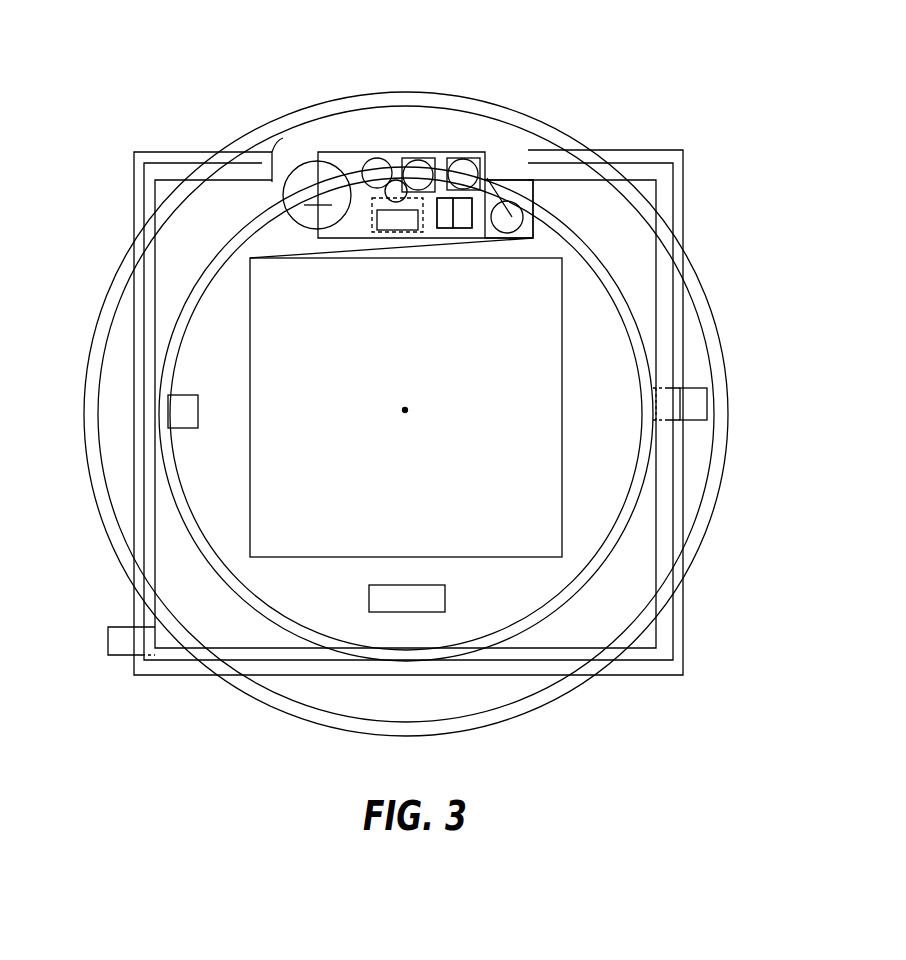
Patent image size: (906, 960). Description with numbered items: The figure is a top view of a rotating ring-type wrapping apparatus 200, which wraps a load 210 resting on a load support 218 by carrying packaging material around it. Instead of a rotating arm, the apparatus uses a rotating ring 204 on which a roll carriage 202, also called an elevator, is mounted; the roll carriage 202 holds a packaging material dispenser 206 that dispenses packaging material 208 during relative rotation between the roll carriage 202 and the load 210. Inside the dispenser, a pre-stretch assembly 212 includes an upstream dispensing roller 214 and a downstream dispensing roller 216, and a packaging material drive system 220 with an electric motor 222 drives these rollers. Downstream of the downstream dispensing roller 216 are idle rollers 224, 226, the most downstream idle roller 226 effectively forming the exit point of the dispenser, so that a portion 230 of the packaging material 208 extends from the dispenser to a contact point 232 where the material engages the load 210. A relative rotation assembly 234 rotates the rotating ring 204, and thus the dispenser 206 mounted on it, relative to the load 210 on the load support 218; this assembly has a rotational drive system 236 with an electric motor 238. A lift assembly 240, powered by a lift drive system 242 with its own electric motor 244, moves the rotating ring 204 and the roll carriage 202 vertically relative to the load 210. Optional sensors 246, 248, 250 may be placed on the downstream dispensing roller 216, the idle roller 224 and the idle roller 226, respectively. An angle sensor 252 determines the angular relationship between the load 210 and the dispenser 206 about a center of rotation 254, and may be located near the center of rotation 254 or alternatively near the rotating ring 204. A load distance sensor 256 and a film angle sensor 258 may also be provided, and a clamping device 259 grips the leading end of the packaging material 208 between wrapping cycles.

The rotating ring-type wrapping apparatus 200 is at (203, 112).
The roll carriage 202 is at (336, 155).
The rotating ring 204 is at (597, 573).
The packaging material dispenser 206 is at (336, 153).
The packaging material 208 is at (283, 196).
The load 210 is at (353, 414).
The pre-stretch assembly 212 is at (378, 142).
The upstream dispensing roller 214 is at (363, 158).
The downstream dispensing roller 216 is at (418, 173).
The load support 218 is at (577, 298).
The packaging material drive system 220 is at (364, 224).
The electric motor 222 is at (392, 218).
The idle roller 224 is at (482, 163).
The idle roller 226 is at (545, 182).
The portion of packaging material 230 is at (425, 232).
The contact point 232 is at (252, 258).
The relative rotation assembly 234 is at (693, 455).
The rotational drive system 236 is at (697, 385).
The electric motor 238 is at (695, 407).
The lift assembly 240 is at (104, 686).
The lift drive system 242 is at (108, 626).
The electric motor 244 is at (120, 638).
The sensor 246 is at (463, 176).
The sensor 248 is at (512, 217).
The sensor 250 is at (534, 208).
The angle sensor 252 is at (198, 415).
The center of rotation 254 is at (405, 412).
The load distance sensor 256 is at (452, 228).
The film angle sensor 258 is at (462, 212).
The clamping device 259 is at (445, 600).